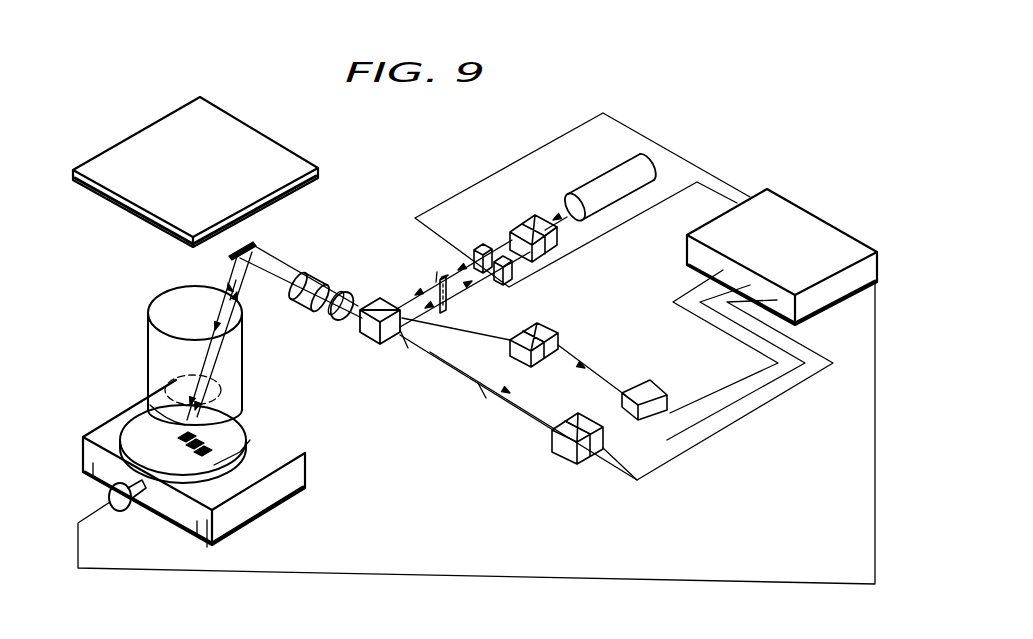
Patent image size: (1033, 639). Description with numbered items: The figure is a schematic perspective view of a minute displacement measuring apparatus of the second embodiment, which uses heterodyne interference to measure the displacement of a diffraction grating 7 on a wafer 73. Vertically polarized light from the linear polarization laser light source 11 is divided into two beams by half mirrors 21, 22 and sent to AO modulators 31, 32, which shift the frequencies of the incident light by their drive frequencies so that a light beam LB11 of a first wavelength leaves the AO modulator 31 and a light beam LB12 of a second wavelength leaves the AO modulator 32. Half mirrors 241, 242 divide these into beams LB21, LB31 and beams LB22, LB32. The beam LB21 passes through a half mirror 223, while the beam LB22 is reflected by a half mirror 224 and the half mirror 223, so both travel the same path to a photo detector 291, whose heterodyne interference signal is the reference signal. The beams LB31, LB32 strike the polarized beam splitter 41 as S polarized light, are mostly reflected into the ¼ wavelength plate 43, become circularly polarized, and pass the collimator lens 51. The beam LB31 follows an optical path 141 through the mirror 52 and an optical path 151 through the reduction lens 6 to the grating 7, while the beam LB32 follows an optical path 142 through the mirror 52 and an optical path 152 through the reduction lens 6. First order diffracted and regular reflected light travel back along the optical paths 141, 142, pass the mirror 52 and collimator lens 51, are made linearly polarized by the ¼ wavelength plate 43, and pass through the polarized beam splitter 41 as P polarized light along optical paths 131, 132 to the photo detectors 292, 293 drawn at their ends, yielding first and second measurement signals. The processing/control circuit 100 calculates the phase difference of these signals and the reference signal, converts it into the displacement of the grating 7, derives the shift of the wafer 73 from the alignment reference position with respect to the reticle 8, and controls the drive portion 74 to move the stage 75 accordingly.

The reticle 8 is at (242, 120).
The mirror 52 is at (255, 243).
The optical path 142 is at (222, 292).
The optical path 141 is at (228, 318).
The optical path 152 is at (150, 405).
The reduction lens 6 is at (242, 376).
The optical path 151 is at (226, 410).
The diffraction grating 7 is at (228, 452).
The wafer 73 is at (250, 440).
The stage 75 is at (308, 473).
The drive portion 74 is at (130, 508).
The collimator lens 51 is at (306, 302).
The ¼ wavelength plate 43 is at (340, 322).
The polarized beam splitter 41 is at (375, 347).
The optical path 131 is at (408, 352).
The half mirror 242 is at (443, 310).
The half mirror 241 is at (436, 262).
The AO modulator 31 is at (480, 246).
The AO modulator 32 is at (515, 270).
The half mirror 21 is at (520, 224).
The half mirror 22 is at (560, 243).
The linear polarization laser light source 11 is at (620, 167).
The processing/control circuit 100 is at (820, 216).
The half mirror 223 is at (552, 338).
The half mirror 224 is at (540, 360).
The photo detector 291 is at (652, 386).
The photodetector 292 is at (564, 466).
The photodetector 293 is at (590, 420).
The optical path 132 is at (495, 400).
The light beam LB11 is at (455, 260).
The light beam LB12 is at (485, 283).
The light beam LB21 is at (532, 327).
The light beam LB22 is at (490, 378).
The light beam LB31 is at (420, 293).
The light beam LB32 is at (400, 300).